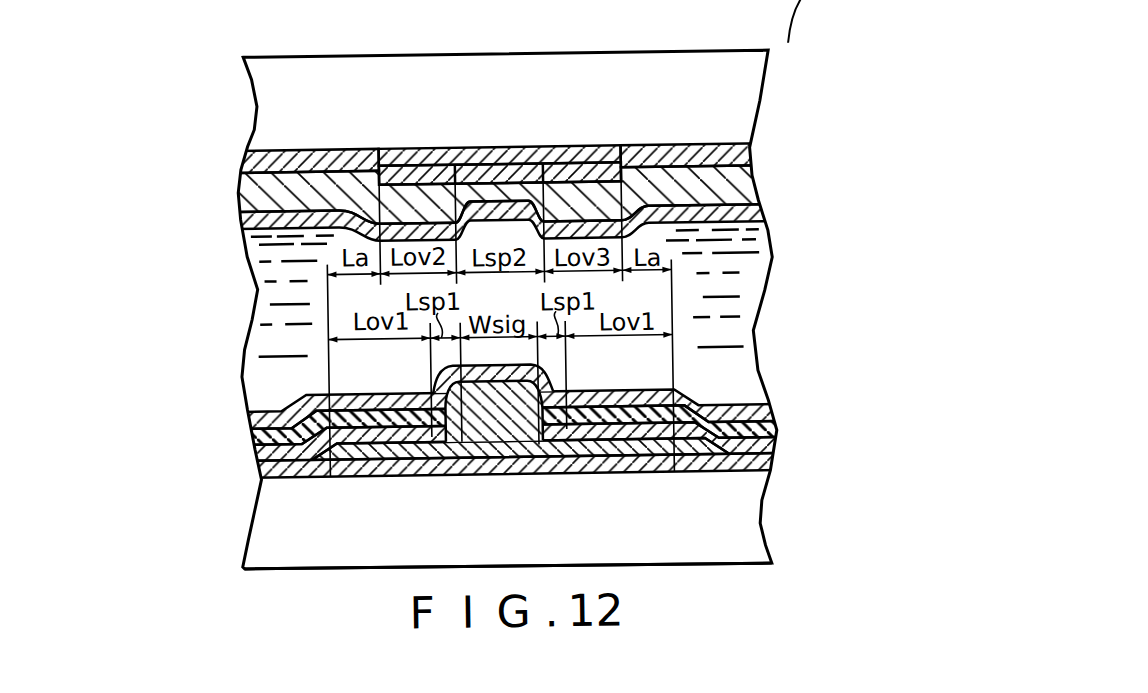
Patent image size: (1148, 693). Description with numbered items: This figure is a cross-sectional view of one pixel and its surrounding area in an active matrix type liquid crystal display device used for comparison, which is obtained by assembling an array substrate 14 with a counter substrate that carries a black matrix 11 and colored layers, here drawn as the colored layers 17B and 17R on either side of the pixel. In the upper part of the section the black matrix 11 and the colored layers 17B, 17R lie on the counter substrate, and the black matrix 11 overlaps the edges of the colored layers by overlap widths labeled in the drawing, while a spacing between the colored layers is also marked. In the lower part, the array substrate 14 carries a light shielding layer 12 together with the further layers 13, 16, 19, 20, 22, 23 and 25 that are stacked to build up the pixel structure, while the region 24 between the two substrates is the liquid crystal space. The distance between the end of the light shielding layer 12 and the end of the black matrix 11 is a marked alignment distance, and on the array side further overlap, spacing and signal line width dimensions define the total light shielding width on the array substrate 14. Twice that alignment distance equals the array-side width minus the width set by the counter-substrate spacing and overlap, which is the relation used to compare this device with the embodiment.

The black matrix 11 is at (606, 151).
The light shielding layer 12 is at (359, 478).
The insulating layer 13 is at (768, 451).
The array substrate 14 is at (767, 577).
The signal line 16 is at (501, 432).
The shield layer B 17B is at (264, 162).
The shield layer R 17R is at (742, 162).
The conductive layer 19 is at (766, 432).
The protective layer 20 is at (749, 414).
The upper insulating layer 22 is at (757, 194).
The lower insulating layer 23 is at (763, 217).
The gap region 24 is at (263, 251).
The base layer 25 is at (766, 466).